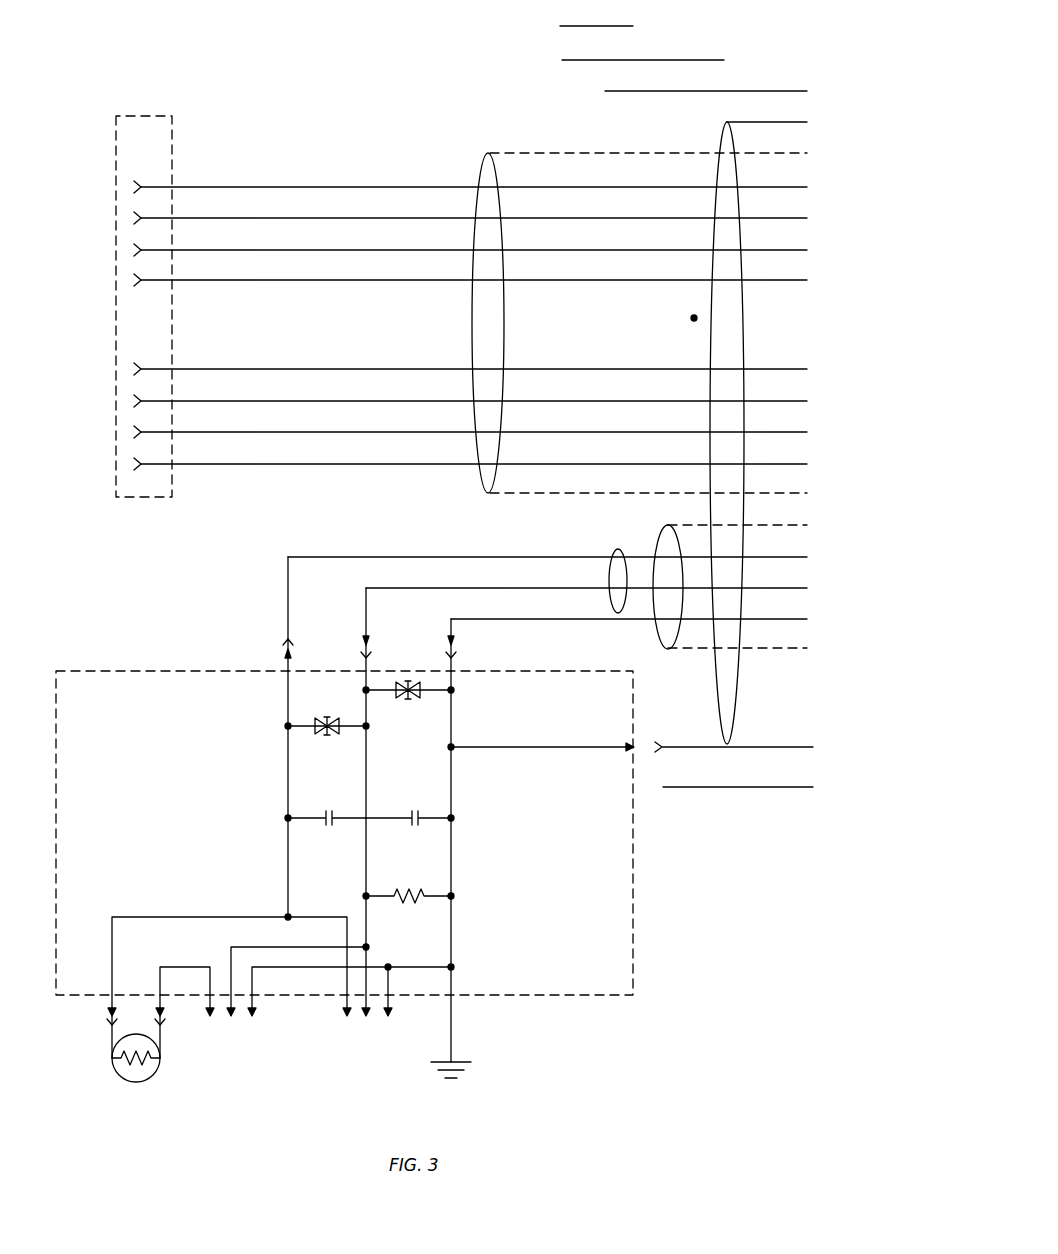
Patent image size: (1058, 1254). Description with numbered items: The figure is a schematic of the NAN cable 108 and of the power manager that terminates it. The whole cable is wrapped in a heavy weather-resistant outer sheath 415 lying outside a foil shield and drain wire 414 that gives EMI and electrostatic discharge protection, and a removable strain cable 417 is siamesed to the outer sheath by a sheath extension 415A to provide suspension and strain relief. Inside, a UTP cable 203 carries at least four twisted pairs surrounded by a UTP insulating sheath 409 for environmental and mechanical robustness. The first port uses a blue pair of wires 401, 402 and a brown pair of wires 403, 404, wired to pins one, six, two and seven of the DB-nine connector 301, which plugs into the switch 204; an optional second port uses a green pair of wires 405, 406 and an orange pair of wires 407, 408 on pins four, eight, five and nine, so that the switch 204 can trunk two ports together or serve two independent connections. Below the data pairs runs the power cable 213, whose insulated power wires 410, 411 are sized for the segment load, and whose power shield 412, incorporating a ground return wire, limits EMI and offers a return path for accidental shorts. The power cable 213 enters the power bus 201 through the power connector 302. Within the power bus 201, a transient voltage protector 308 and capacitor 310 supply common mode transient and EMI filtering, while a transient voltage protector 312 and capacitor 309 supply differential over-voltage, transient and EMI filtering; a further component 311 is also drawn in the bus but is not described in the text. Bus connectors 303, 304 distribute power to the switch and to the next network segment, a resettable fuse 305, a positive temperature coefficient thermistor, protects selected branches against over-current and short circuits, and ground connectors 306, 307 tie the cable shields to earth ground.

The NAN cable 108 is at (82, 62).
The power bus 201 is at (128, 672).
The UTP cable 203 is at (281, 484).
The switch 204 is at (116, 296).
The power cable 213 is at (688, 525).
The DB-9 connector 301 is at (172, 133).
The power connector 302 is at (274, 648).
The bus connector 303 is at (388, 1025).
The bus connector 304 is at (250, 1025).
The resettable fuse 305 is at (108, 1028).
The ground connector 306 is at (456, 1057).
The ground connector 307 is at (652, 738).
The Transient Voltage Protector 308 is at (414, 698).
The capacitor 309 is at (328, 826).
The capacitor 310 is at (413, 826).
The resistor 311 is at (413, 903).
The Transient Voltage Protector 312 is at (334, 734).
The blue pair wire 401 is at (513, 187).
The blue pair wire 402 is at (513, 218).
The brown pair wire 403 is at (513, 250).
The brown pair wire 404 is at (513, 280).
The green pair wire 405 is at (513, 369).
The green pair wire 406 is at (513, 401).
The orange pair wire 407 is at (513, 432).
The orange pair wire 408 is at (513, 464).
The UTP insulating sheath 409 is at (488, 153).
The insulated power wire 410 is at (513, 557).
The insulated power wire 411 is at (513, 588).
The power shield 412 is at (513, 619).
The foil shield and drain wire 414 is at (780, 122).
The outer sheath 415 is at (780, 91).
The sheath extension 415A is at (560, 28).
The removable strain cable 417 is at (562, 62).